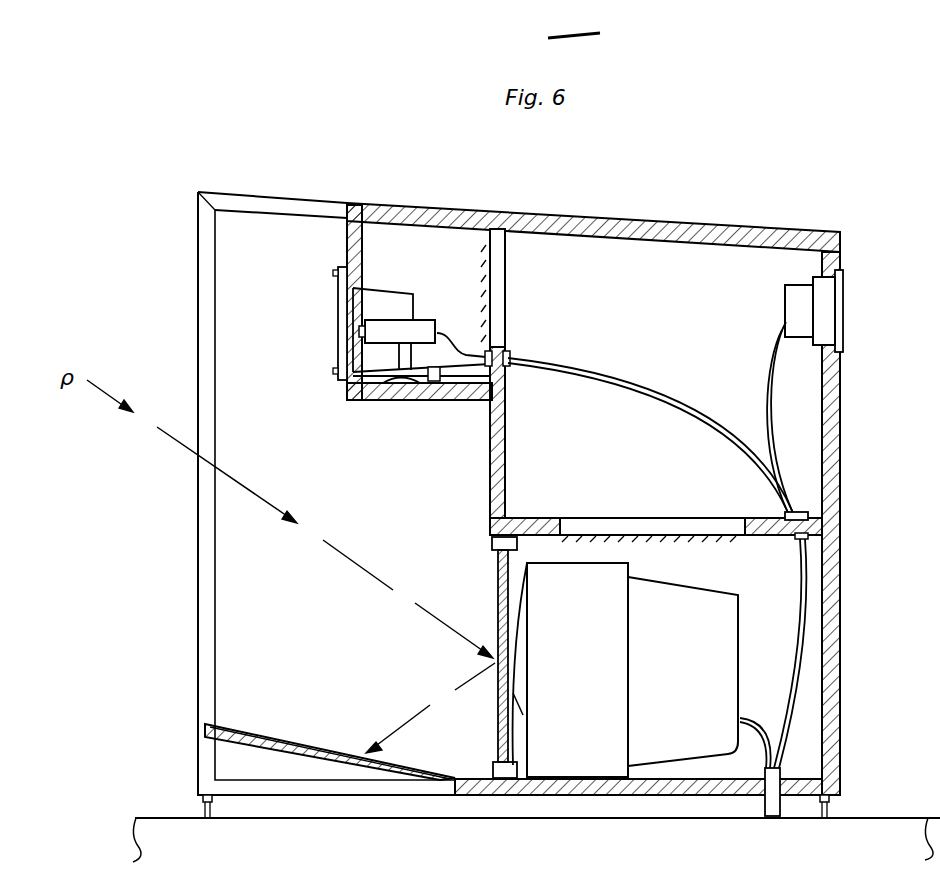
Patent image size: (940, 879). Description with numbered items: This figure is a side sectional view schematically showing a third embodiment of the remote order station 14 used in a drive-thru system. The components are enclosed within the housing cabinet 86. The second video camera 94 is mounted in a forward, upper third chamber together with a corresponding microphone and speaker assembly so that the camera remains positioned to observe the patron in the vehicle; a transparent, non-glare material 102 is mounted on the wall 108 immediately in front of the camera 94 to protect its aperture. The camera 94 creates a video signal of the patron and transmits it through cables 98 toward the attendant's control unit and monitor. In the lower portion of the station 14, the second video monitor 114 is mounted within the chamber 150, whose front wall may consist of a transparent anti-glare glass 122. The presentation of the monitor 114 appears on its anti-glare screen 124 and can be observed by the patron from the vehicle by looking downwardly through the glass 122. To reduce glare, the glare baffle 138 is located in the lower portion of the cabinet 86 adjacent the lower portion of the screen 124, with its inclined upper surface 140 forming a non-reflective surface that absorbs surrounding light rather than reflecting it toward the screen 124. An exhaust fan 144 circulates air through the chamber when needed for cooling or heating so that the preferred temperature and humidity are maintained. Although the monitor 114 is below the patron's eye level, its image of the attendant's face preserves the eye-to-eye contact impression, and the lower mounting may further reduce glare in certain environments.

The remote order station 14 is at (840, 497).
The housing cabinet 86 is at (828, 258).
The second video camera 94 is at (420, 323).
The cables 98 is at (547, 365).
The transparent non-glare material 102 is at (337, 305).
The wall 108 is at (345, 238).
The second video monitor 114 is at (705, 648).
The transparent anti-glare glass 122 is at (498, 568).
The screen 124 is at (500, 632).
The glare baffle 138 is at (262, 740).
The upper surface 140 is at (330, 753).
The exhaust fan 144 is at (826, 307).
The chamber 150 is at (808, 705).